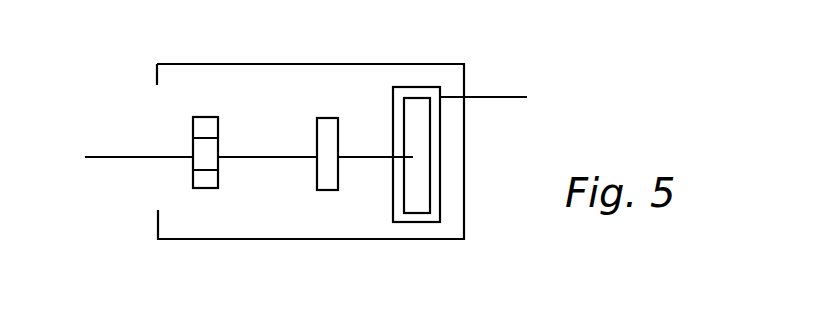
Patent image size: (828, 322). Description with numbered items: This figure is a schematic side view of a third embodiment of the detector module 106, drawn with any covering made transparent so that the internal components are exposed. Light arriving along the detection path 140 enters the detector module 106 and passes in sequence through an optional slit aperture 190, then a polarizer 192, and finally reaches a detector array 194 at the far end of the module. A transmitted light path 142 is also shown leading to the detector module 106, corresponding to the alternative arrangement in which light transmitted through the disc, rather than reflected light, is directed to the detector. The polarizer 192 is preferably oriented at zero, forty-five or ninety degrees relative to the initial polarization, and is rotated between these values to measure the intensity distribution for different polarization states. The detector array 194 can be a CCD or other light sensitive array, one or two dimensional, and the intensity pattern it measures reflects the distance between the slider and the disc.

The detector module 106 is at (347, 64).
The detection path 140 is at (100, 160).
The transmitted light path 142 is at (495, 97).
The slit aperture 190 is at (198, 118).
The polarizer 192 is at (323, 190).
The detector array 194 is at (437, 207).